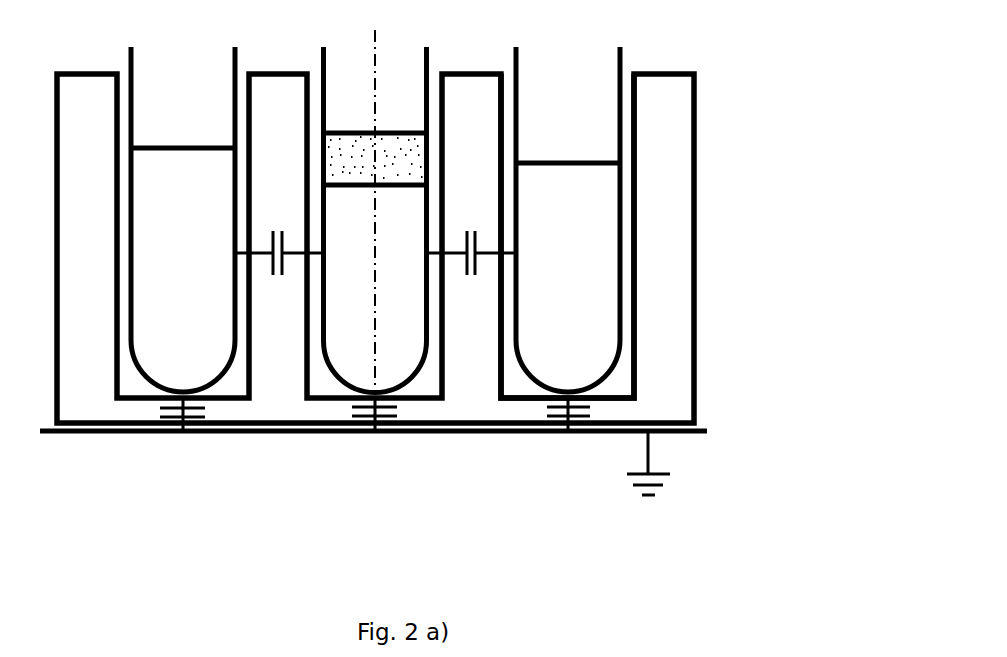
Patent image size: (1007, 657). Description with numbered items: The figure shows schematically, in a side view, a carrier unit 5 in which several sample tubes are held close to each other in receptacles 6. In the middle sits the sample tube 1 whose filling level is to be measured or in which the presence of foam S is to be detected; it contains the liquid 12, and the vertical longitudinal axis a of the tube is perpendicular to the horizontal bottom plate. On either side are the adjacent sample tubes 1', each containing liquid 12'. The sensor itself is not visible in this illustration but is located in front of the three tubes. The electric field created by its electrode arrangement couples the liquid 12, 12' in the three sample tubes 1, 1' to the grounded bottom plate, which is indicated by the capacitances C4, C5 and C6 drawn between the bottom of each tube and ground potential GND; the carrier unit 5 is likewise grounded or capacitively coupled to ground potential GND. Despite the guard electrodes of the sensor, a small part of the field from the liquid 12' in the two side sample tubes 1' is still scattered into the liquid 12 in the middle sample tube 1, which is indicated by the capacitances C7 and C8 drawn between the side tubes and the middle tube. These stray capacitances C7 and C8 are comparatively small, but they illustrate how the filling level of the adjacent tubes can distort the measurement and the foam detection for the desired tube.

The carrier unit 5 is at (705, 125).
The receptacle 6 is at (623, 376).
The adjacent sample tube 1' is at (409, 198).
The liquid in adjacent sample tube 12' is at (375, 82).
The sample tube 1 is at (406, 198).
The liquid 12 is at (372, 67).
The foam S is at (395, 153).
The longitudinal axis a is at (375, 193).
The capacitance between side tube and middle tube C7 is at (279, 272).
The capacitance between side tube and middle tube C8 is at (472, 271).
The capacitance to bottom plate C5 is at (200, 414).
The capacitance to bottom plate C4 is at (392, 414).
The capacitance to bottom plate C6 is at (586, 414).
The ground potential GND is at (373, 484).